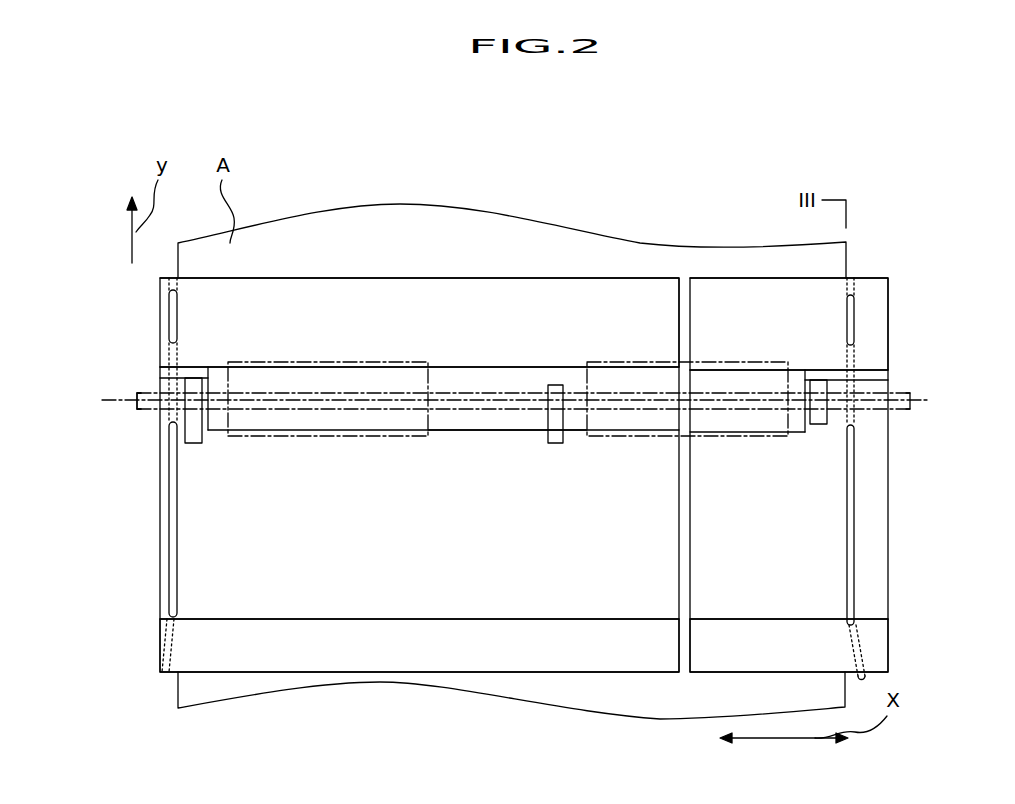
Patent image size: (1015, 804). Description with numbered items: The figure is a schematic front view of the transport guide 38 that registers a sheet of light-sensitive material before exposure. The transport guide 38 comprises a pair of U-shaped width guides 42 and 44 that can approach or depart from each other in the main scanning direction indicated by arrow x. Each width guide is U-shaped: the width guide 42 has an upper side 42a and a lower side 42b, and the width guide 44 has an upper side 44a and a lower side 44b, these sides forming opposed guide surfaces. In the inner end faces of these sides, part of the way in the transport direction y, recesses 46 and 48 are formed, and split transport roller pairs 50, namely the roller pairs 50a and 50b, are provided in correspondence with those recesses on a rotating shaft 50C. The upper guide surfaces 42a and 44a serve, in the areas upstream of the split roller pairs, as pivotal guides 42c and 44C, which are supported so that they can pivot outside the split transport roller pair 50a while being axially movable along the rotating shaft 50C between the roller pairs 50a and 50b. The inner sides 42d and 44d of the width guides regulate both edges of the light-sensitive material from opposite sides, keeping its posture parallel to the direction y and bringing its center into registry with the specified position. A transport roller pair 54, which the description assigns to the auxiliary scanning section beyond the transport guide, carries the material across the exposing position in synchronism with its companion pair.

The transport guide 38 is at (522, 193).
The U-shaped width guide 42 is at (380, 450).
The upper side of width guide 42a is at (363, 303).
The lower side of width guide 42b is at (163, 372).
The pivotal guide 42c is at (312, 640).
The inner side of width guide 42d is at (178, 352).
The U-shaped width guide 44 is at (811, 480).
The upper side of width guide 44a is at (733, 300).
The lower side of width guide 44b is at (880, 372).
The pivotal guide 44C is at (727, 640).
The inner side of width guide 44d is at (845, 350).
The recess 46 is at (448, 418).
The recess 48 is at (797, 427).
The split transport roller pair 50 is at (547, 324).
The split transport roller pair 50a is at (627, 360).
The split transport roller pair 50b is at (407, 361).
The rotating shaft 50C is at (525, 410).
The transport roller pair 54 is at (150, 408).